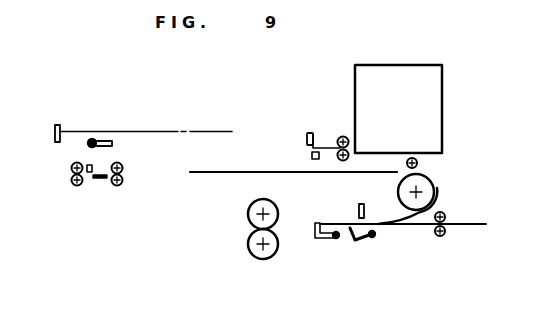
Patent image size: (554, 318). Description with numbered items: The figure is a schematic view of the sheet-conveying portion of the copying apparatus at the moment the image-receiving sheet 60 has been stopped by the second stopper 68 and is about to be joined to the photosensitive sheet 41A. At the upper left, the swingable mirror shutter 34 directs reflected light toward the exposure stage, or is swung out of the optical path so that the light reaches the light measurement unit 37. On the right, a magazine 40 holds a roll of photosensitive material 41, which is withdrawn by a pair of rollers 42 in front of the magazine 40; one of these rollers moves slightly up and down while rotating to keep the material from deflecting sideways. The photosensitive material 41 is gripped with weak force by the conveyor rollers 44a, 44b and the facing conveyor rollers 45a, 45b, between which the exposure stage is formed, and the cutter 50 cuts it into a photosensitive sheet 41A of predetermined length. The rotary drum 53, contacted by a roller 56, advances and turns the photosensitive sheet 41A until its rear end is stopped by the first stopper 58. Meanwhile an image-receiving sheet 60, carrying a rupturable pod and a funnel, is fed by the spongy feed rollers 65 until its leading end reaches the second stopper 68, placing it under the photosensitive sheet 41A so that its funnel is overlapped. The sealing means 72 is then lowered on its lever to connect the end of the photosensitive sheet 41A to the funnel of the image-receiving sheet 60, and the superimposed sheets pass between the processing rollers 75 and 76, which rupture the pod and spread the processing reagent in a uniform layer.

The swingable mirror shutter 34 is at (103, 131).
The light measurement unit 37 is at (60, 125).
The magazine 40 is at (396, 66).
The photosensitive material 41 is at (330, 147).
The photosensitive sheet 41A is at (257, 170).
The pair of rollers 42 is at (343, 136).
The conveyor roller 44a is at (123, 165).
The conveyor roller 44b is at (118, 186).
The conveyor roller 45a is at (72, 165).
The conveyor roller 45b is at (82, 186).
The cutter 50 is at (310, 133).
The rotary drum 53 is at (436, 190).
The roller 56 is at (418, 164).
The first stopper 58 is at (364, 243).
The image-receiving sheet 60 is at (472, 228).
The feed rollers 65 is at (442, 237).
The second stopper 68 is at (327, 240).
The sealing means 72 is at (358, 204).
The processing roller 75 is at (250, 206).
The processing roller 76 is at (262, 260).